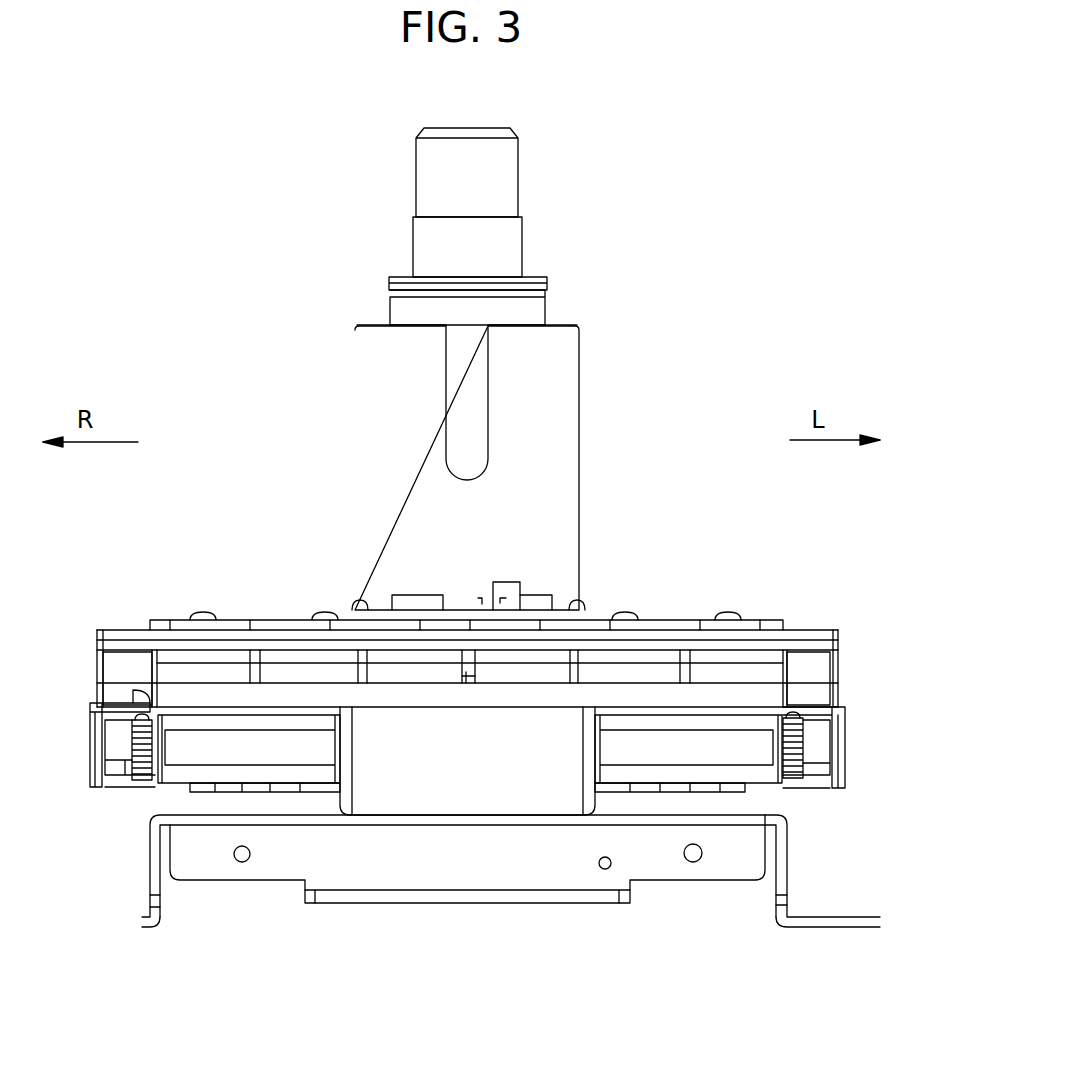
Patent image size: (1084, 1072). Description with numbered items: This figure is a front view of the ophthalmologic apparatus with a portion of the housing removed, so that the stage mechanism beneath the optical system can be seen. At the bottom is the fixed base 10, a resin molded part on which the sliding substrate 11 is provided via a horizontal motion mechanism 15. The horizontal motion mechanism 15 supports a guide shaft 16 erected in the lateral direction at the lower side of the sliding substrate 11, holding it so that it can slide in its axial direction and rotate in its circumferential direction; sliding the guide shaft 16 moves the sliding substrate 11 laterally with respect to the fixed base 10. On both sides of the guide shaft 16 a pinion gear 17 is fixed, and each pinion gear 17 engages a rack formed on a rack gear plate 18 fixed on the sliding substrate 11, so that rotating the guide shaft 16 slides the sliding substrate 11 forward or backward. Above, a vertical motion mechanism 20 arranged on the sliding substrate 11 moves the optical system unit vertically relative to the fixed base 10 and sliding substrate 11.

The fixed base 10 is at (545, 873).
The sliding substrate 11 is at (595, 697).
The horizontal motion mechanism 15 is at (380, 793).
The guide shaft 16 is at (193, 750).
The pinion gear 17 is at (104, 696).
The rack gear plate 18 is at (120, 722).
The vertical motion mechanism 20 is at (370, 414).